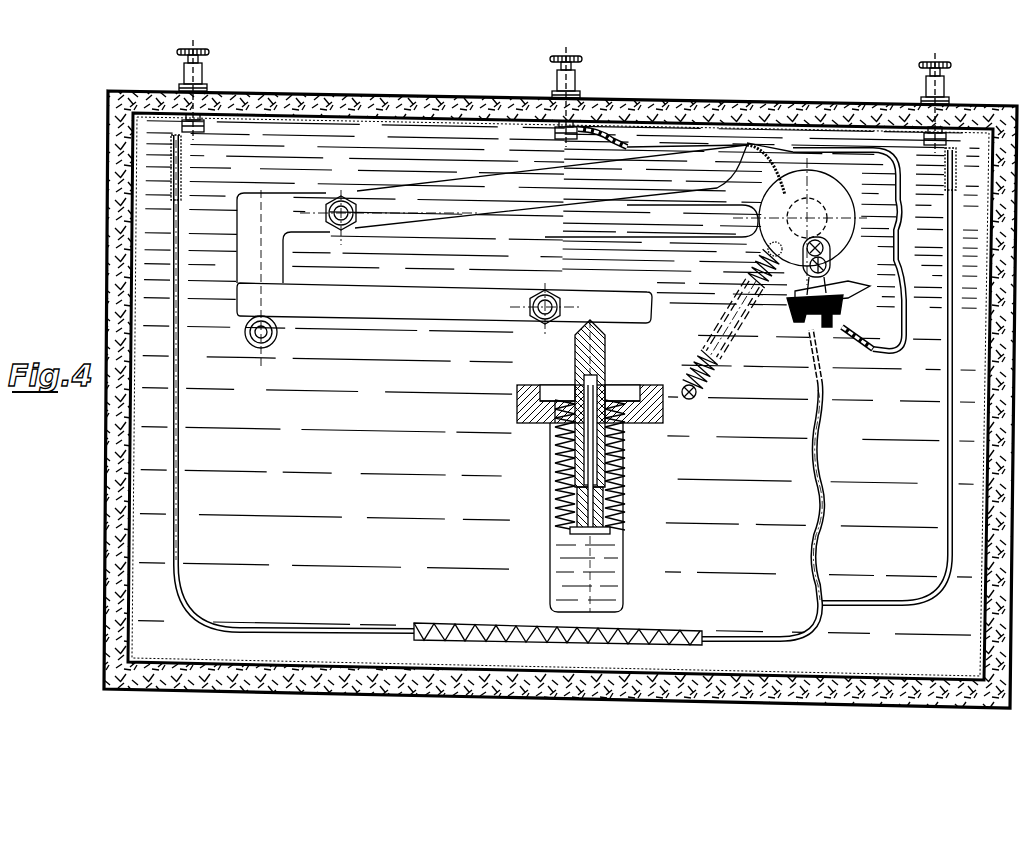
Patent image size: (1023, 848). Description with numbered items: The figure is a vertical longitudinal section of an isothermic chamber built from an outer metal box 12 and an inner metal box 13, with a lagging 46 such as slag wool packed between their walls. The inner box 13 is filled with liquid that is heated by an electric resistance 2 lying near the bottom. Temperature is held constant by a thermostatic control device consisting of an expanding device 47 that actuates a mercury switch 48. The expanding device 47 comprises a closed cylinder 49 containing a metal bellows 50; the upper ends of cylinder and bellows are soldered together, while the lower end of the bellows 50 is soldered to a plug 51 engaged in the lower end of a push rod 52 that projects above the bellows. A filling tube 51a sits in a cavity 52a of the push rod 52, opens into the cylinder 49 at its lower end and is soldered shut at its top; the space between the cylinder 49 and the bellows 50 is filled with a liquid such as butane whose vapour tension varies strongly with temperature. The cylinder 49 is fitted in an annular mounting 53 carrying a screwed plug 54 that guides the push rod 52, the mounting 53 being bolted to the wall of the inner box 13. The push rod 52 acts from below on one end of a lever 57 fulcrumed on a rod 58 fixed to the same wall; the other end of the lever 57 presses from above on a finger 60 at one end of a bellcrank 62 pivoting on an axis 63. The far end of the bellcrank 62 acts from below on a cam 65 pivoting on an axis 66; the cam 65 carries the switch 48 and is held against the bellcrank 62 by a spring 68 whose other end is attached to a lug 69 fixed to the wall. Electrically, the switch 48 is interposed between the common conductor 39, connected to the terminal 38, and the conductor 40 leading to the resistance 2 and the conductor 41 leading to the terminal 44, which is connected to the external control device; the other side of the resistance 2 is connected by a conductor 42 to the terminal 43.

The electric resistance 2 is at (479, 623).
The outer metal box 12 is at (108, 336).
The inner metal box 13 is at (133, 408).
The terminal 38 is at (576, 84).
The common conductor 39 is at (906, 214).
The conductor 40 is at (752, 636).
The conductor 41 is at (946, 424).
The conductor 42 is at (179, 368).
The terminal 43 is at (202, 72).
The terminal 44 is at (946, 91).
The lagging 46 is at (125, 483).
The expanding device 47 is at (570, 466).
The mercury switch 48 is at (855, 291).
The closed cylinder 49 is at (624, 472).
The metal bellows 50 is at (617, 489).
The plug 51 is at (610, 528).
The filling tube 51a is at (589, 458).
The push rod 52 is at (606, 375).
The cavity 52a is at (594, 389).
The annular mounting 53 is at (520, 404).
The screwed plug 54 is at (557, 389).
The lever 57 is at (455, 294).
The rod 58 is at (557, 298).
The finger 60 is at (248, 336).
The bellcrank 62 is at (401, 206).
The axis 63 is at (349, 205).
The cam 65 is at (742, 192).
The axis 66 is at (820, 210).
The spring 68 is at (729, 311).
The lug 69 is at (693, 398).